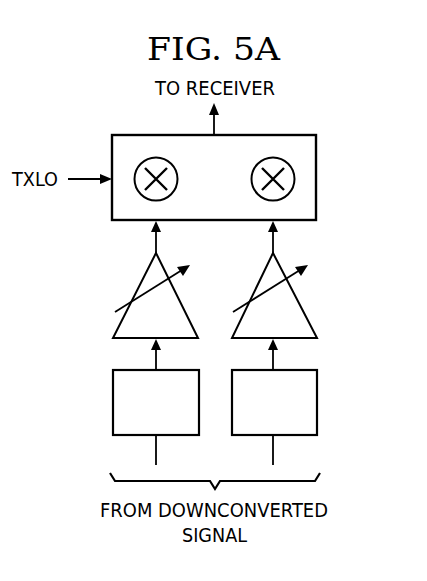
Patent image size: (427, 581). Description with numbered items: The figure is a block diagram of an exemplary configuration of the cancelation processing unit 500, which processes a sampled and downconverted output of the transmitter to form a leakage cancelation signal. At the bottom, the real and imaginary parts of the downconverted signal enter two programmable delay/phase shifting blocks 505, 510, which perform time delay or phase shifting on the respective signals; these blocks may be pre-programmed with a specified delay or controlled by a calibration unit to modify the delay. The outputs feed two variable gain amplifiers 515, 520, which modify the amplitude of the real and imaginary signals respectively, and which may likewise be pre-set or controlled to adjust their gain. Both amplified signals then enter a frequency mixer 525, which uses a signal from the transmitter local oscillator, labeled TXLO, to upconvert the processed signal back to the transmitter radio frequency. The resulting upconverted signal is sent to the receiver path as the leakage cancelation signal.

The cancelation processing unit 500 is at (88, 55).
The frequency mixer 525 is at (316, 155).
The variable gain amplifier 515 is at (142, 275).
The variable gain amplifier 520 is at (298, 292).
The programmable delay/phase shifting block 505 is at (113, 404).
The programmable delay/phase shifting block 510 is at (317, 404).